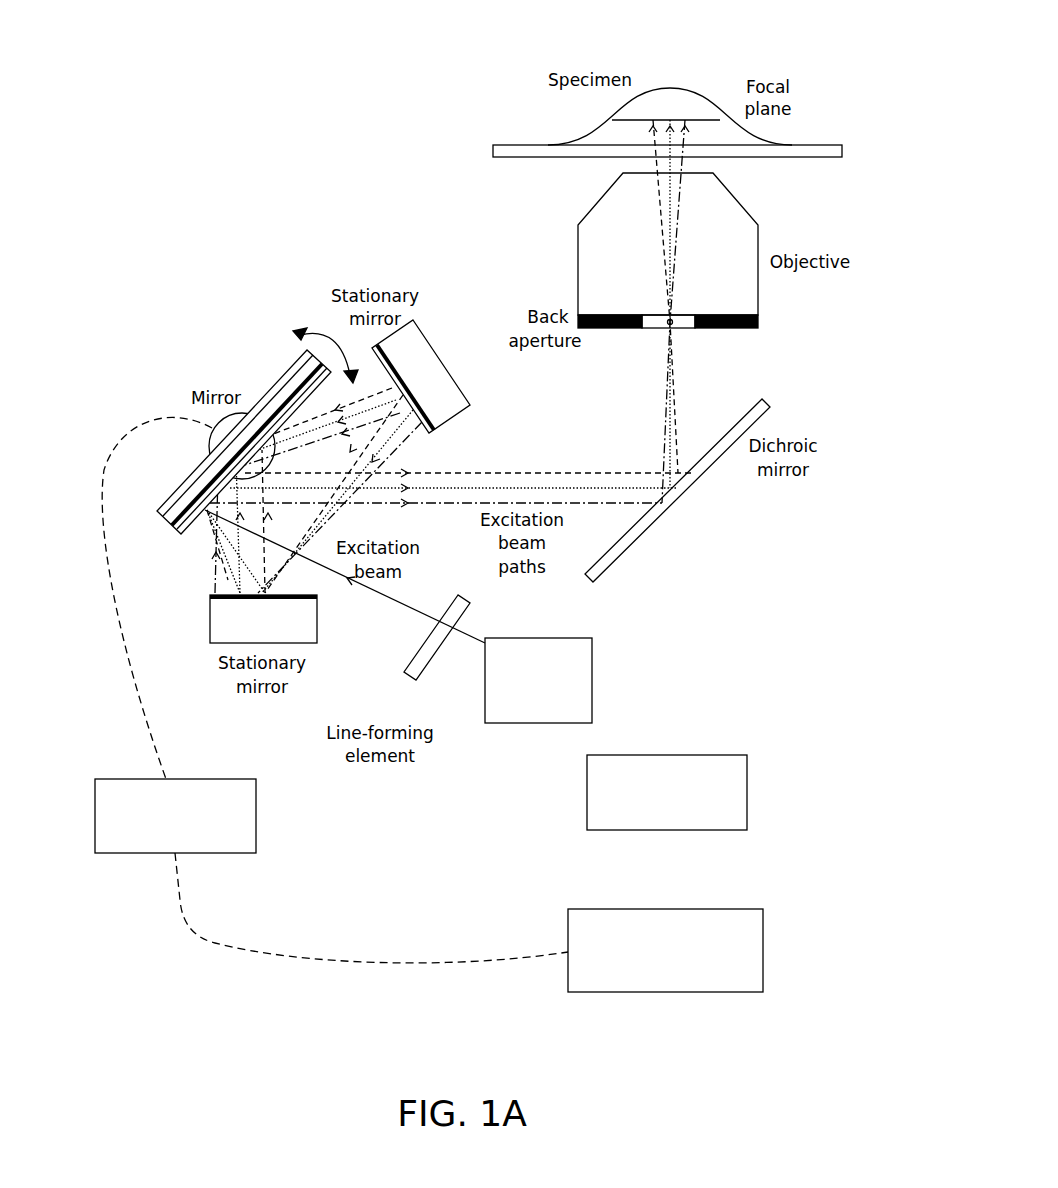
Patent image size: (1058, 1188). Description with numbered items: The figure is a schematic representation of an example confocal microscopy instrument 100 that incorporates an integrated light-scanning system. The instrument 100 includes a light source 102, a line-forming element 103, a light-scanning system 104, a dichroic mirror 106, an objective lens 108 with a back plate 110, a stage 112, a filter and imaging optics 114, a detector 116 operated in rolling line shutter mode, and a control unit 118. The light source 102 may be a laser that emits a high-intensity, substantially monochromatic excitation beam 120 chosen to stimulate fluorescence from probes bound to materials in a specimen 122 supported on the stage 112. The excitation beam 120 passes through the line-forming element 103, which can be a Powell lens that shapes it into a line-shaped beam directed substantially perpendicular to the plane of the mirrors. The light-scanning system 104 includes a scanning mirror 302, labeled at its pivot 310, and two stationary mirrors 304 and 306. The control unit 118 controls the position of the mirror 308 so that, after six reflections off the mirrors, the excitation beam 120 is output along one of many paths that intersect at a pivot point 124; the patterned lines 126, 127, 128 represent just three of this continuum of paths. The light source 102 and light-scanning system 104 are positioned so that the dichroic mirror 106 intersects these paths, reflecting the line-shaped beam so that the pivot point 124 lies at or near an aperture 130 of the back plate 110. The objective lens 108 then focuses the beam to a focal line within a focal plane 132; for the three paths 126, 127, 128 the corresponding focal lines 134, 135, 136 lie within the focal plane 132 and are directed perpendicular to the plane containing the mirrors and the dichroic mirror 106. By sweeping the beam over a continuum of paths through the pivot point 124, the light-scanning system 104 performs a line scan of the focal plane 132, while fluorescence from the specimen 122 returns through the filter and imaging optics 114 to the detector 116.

The confocal microscopy instrument 100 is at (226, 130).
The light source 102 is at (510, 723).
The line-forming element 103 is at (400, 673).
The light-scanning system 104 is at (143, 285).
The dichroic mirror 106 is at (707, 470).
The objective lens 108 is at (745, 208).
The back plate 110 is at (727, 328).
The stage 112 is at (815, 150).
The filter and imaging optics 114 is at (747, 793).
The detector 116 is at (757, 952).
The control unit 118 is at (243, 818).
The excitation beam 120 is at (370, 595).
The specimen 122 is at (603, 137).
The pivot point 124 is at (672, 328).
The excitation beam path 126 is at (440, 507).
The excitation beam path 127 is at (545, 488).
The excitation beam path 128 is at (618, 473).
The aperture 130 is at (657, 328).
The focal plane 132 is at (712, 120).
The focal line 134 is at (653, 118).
The focal line 135 is at (670, 118).
The focal line 136 is at (685, 118).
The scanning mirror 302 is at (238, 372).
The stationary mirror 304 is at (452, 413).
The stationary mirror 306 is at (213, 620).
The mirror 308 is at (287, 375).
The mirror pivot 310 is at (210, 443).